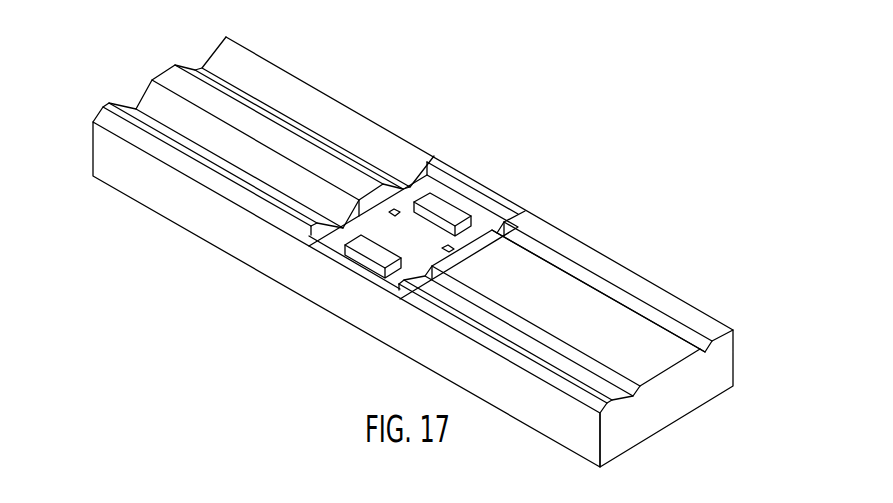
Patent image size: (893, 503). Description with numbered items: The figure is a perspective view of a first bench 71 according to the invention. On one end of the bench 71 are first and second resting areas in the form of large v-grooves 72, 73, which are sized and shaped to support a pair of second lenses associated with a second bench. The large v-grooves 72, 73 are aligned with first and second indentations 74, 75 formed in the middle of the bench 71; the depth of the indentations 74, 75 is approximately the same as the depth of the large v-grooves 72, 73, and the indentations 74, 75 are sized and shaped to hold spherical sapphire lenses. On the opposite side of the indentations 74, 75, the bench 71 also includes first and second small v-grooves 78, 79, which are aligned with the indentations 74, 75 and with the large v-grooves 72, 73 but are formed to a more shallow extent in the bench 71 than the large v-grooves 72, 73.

The bench 71 is at (222, 312).
The first large v-groove 72 is at (122, 100).
The second large v-groove 73 is at (189, 62).
The first indentation 74 is at (375, 243).
The second indentation 75 is at (447, 203).
The first small v-groove 78 is at (652, 402).
The second small v-groove 79 is at (722, 359).